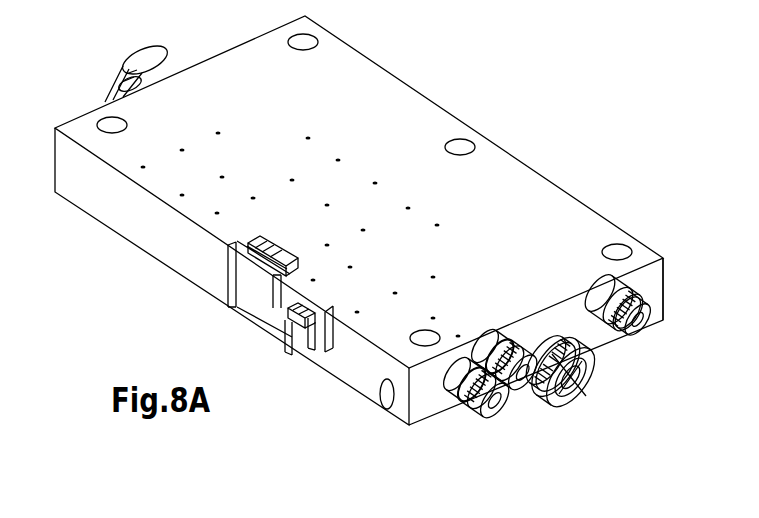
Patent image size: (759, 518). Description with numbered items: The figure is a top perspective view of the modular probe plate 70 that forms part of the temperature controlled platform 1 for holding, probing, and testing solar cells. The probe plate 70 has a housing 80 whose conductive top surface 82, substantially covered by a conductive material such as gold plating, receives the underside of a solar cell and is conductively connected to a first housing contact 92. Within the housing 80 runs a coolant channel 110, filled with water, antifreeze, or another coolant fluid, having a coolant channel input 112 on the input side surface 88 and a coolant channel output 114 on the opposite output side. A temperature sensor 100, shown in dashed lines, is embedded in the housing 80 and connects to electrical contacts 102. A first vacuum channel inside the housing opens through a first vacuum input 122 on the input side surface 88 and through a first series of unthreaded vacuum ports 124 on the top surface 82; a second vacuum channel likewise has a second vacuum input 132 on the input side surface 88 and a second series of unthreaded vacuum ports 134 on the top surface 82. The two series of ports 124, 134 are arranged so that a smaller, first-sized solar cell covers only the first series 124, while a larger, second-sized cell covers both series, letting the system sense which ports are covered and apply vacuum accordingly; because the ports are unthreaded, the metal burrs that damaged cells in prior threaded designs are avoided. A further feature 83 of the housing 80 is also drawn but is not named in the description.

The temperature controlled platform 1 is at (512, 86).
The probe plate 70 is at (422, 71).
The housing 80 is at (538, 193).
The conductive top surface 82 is at (502, 175).
The connector housing 83 is at (230, 294).
The input side surface 88 is at (664, 275).
The first housing contact 92 is at (325, 347).
The temperature sensor 100 is at (312, 345).
The electrical contacts 102 is at (297, 328).
The coolant channel 110 is at (593, 385).
The coolant channel input 112 is at (577, 397).
The coolant channel output 114 is at (110, 90).
The first vacuum input 122 is at (520, 383).
The first series of unthreaded vacuum ports 124 is at (363, 230).
The second vacuum input 132 is at (645, 333).
The second series of unthreaded vacuum ports 134 is at (437, 225).